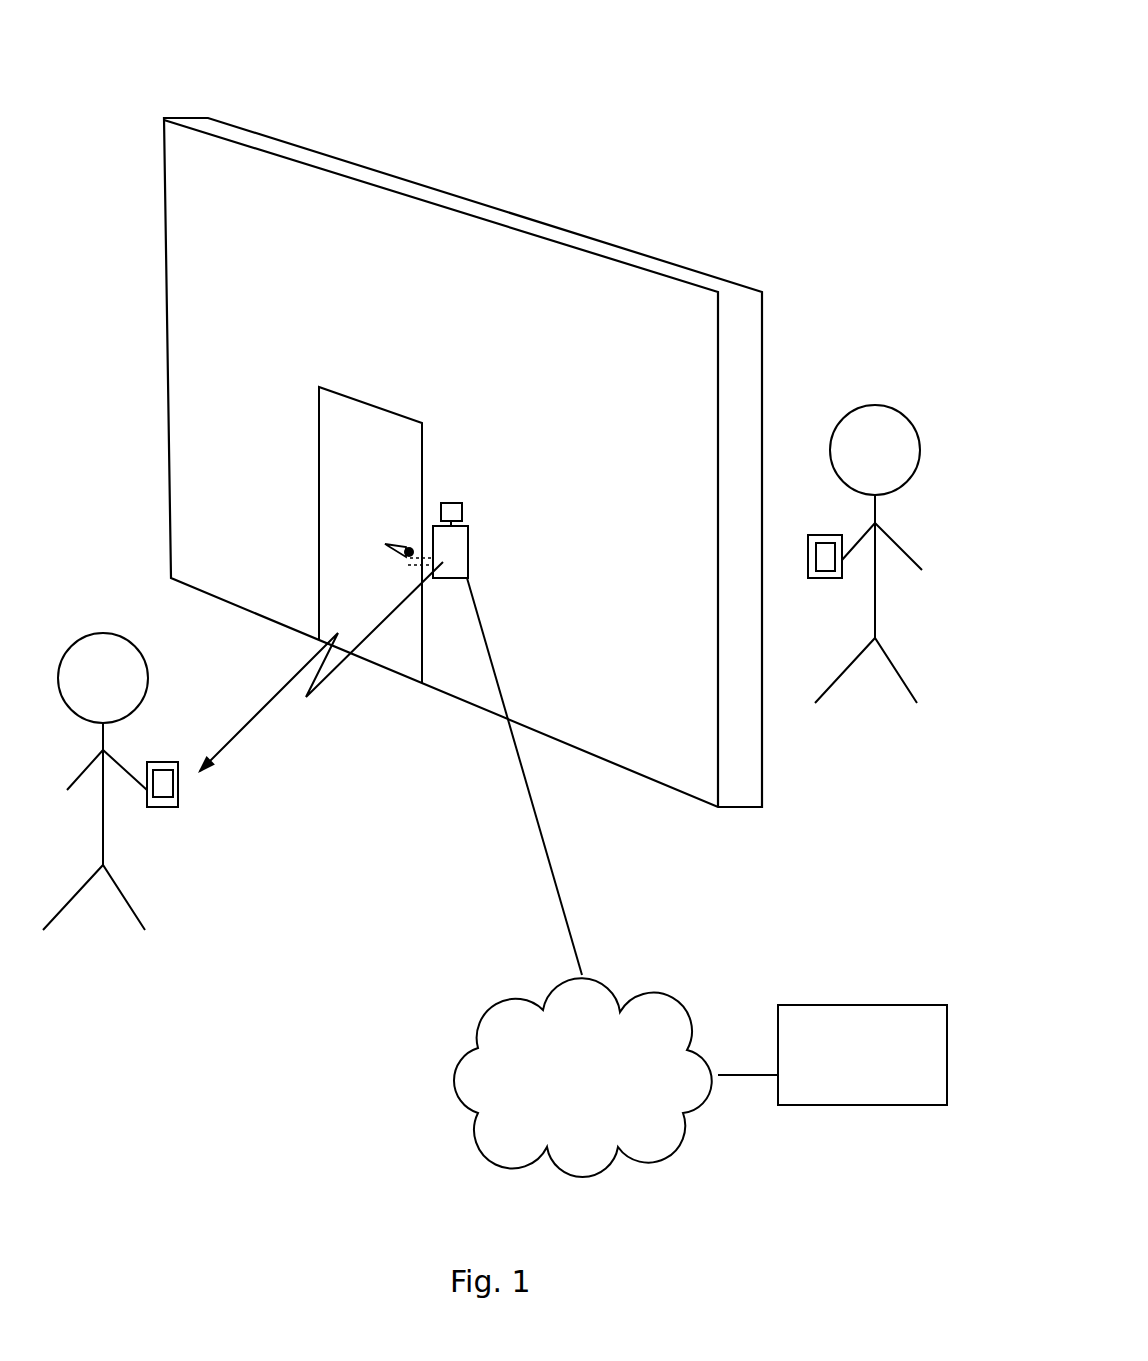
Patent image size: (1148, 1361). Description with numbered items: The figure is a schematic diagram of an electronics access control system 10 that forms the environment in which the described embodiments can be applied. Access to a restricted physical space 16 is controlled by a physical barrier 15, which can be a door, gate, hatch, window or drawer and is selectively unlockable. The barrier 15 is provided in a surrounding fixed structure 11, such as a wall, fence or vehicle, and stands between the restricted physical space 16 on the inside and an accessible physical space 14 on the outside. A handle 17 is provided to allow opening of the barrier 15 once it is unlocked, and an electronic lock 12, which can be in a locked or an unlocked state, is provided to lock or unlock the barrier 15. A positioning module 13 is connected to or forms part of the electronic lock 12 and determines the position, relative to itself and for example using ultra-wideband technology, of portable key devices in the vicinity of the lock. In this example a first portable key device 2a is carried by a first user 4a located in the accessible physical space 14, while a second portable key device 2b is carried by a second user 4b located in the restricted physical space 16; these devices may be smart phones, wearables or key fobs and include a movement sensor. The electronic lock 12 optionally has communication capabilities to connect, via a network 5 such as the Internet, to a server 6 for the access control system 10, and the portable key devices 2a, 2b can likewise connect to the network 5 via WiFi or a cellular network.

The electronics access control system 10 is at (745, 99).
The surrounding fixed structure 11 is at (248, 427).
The accessible physical space 14 is at (93, 341).
The restricted physical space 16 is at (862, 210).
The physical barrier 15 is at (347, 492).
The electronic lock 12 is at (468, 538).
The positioning module 13 is at (462, 503).
The handle 17 is at (400, 545).
The first user 4a is at (80, 634).
The second user 4b is at (903, 413).
The first portable key device 2a is at (178, 798).
The second portable key device 2b is at (812, 535).
The network 5 is at (588, 1087).
The server 6 is at (863, 1003).